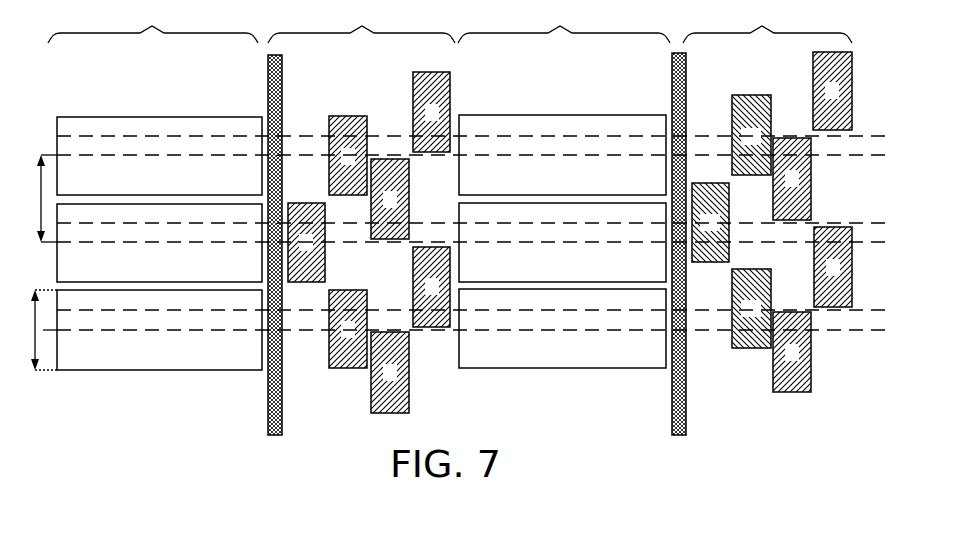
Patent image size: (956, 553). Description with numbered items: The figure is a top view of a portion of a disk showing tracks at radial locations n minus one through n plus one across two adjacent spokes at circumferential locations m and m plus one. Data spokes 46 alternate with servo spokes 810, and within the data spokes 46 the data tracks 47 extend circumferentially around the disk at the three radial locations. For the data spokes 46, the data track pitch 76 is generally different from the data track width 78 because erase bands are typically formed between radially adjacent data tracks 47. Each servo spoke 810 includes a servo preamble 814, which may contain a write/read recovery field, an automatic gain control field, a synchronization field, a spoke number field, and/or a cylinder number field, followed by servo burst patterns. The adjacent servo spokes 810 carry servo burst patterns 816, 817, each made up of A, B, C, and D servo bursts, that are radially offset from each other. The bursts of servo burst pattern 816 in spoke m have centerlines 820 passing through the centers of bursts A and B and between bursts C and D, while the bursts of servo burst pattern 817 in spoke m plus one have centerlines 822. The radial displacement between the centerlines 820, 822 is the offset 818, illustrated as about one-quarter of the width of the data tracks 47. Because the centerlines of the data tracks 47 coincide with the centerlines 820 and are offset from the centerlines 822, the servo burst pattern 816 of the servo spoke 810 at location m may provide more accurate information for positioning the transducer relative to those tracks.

The data spokes 46 is at (359, 26).
The data tracks 47 is at (147, 190).
The data track pitch 76 is at (38, 198).
The data track width 78 is at (36, 330).
The servo spokes 810 is at (560, 26).
The servo preamble 814 is at (283, 91).
The servo burst pattern 816 is at (355, 420).
The servo burst pattern 817 is at (767, 420).
The offset 818 is at (867, 183).
The centerlines 820 is at (862, 242).
The centerlines 822 is at (843, 222).